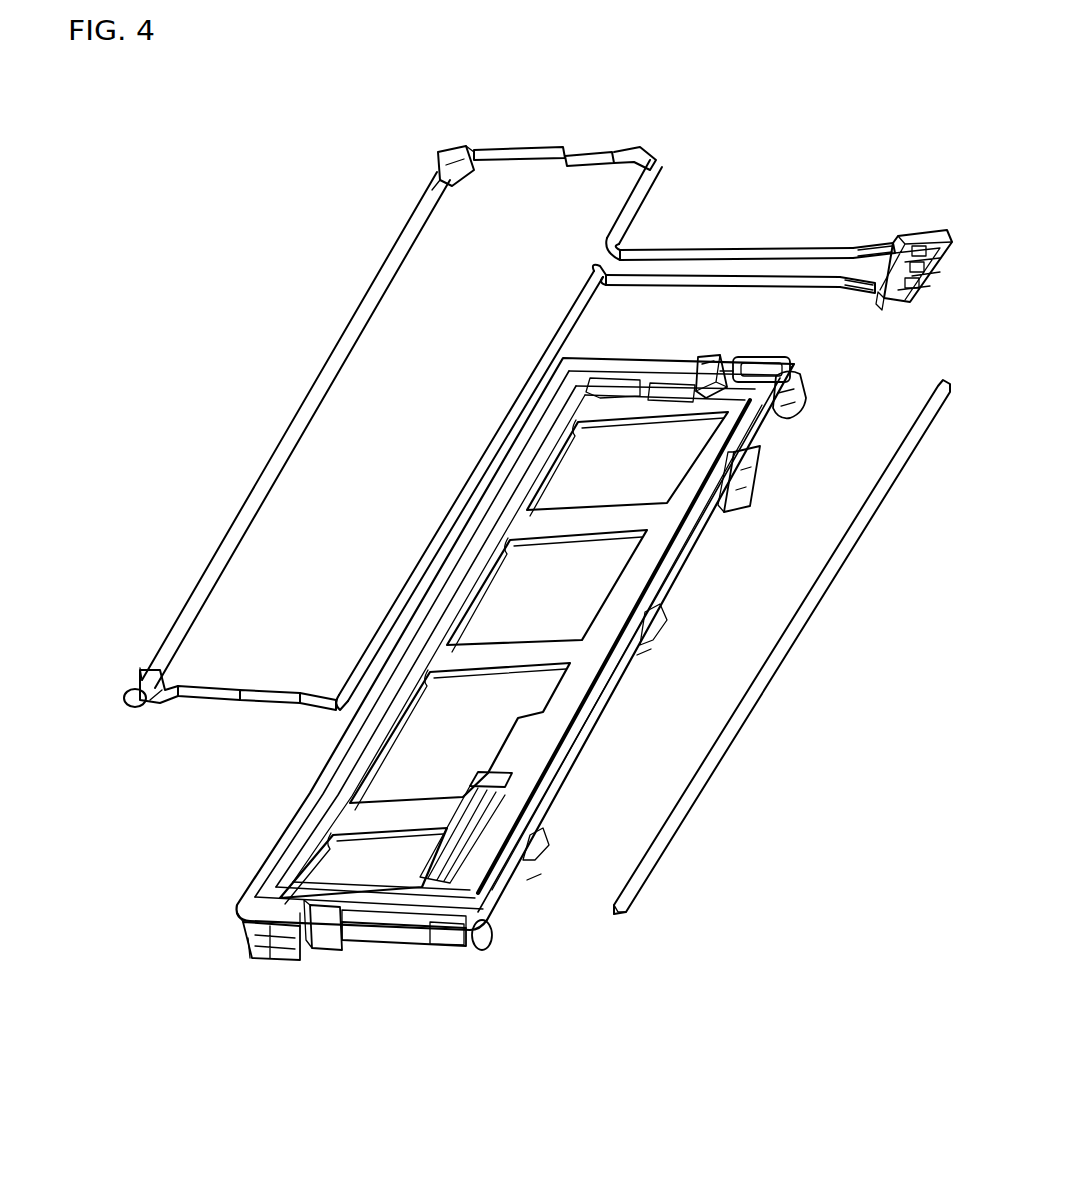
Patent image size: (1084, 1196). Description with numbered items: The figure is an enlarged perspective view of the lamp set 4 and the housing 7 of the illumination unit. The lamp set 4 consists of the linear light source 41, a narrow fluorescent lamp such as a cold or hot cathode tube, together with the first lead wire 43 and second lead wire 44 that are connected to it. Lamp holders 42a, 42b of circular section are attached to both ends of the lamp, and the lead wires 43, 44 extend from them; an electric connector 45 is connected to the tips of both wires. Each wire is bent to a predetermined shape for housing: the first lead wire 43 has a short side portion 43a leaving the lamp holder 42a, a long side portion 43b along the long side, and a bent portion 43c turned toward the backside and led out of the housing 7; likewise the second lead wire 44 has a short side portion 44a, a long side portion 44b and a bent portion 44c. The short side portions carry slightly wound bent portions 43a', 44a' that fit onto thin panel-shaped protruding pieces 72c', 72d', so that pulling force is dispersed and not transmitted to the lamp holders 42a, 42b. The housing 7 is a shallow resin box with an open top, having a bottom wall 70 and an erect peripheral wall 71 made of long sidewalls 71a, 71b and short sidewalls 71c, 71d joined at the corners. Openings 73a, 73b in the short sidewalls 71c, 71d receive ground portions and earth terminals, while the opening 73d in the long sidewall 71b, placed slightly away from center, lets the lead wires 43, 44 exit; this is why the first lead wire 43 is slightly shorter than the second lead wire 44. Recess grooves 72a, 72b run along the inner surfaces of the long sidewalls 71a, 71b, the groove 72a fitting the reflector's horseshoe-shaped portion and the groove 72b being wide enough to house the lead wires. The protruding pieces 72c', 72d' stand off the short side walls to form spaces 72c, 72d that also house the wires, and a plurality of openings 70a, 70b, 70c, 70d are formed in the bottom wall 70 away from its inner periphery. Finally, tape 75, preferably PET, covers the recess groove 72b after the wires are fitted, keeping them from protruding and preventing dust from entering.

The lamp set 4 is at (302, 369).
The linear light source 41 is at (362, 311).
The lamp holder 42a is at (452, 152).
The lamp holder 42b is at (144, 674).
The first lead wire 43 is at (730, 250).
The short side portion 43a is at (519, 132).
The bent portion 43a' is at (613, 137).
The long side portion 43b is at (646, 194).
The bent portion 43c is at (610, 242).
The second lead wire 44 is at (726, 288).
The short side portion 44a is at (209, 716).
The bent portion 44a' is at (272, 728).
The long side portion 44b is at (338, 693).
The bent portion 44c is at (596, 272).
The electric connector 45 is at (910, 242).
The housing 7 is at (686, 661).
The bottom wall 70 is at (640, 576).
The opening 70a is at (363, 863).
The opening 70b is at (460, 773).
The opening 70c is at (547, 587).
The opening 70d is at (627, 461).
The peripheral wall 71 is at (708, 553).
The long sidewall 71a is at (314, 797).
The long sidewall 71b is at (602, 727).
The short sidewall 71c is at (392, 947).
The short sidewall 71d is at (626, 355).
The recess groove 72a is at (280, 850).
The recess groove 72b is at (564, 789).
The space 72c is at (461, 963).
The protruding piece 72c' is at (324, 972).
The space 72d is at (687, 353).
The protruding piece 72d' is at (826, 389).
The opening 73a is at (328, 949).
The opening 73b is at (743, 358).
The opening 73d is at (754, 492).
The tape 75 is at (853, 538).